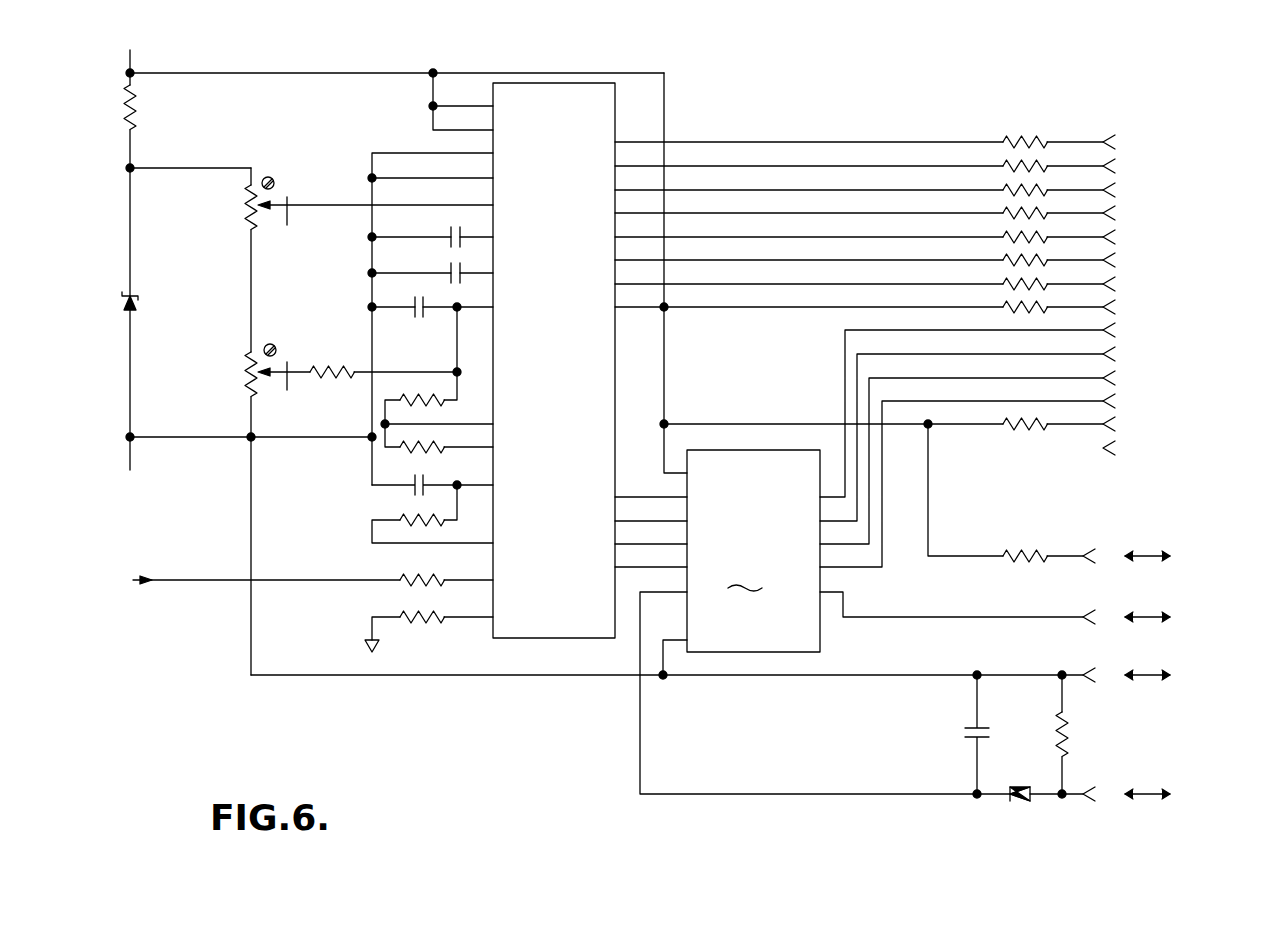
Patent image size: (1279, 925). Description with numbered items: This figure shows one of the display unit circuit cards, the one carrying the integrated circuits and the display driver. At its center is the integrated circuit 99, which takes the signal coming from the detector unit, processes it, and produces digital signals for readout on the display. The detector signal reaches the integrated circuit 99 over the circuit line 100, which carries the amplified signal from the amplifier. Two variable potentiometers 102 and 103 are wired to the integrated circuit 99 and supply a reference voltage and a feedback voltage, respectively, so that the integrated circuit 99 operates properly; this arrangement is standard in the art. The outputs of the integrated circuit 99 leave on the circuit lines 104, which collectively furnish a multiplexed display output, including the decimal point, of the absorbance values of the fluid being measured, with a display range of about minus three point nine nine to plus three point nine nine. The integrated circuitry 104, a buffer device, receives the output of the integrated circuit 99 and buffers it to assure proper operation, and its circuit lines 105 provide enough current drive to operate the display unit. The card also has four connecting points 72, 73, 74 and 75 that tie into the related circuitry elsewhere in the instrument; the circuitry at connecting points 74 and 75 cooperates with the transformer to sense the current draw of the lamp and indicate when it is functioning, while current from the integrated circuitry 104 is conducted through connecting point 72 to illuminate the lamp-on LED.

The integrated circuit 99 is at (538, 343).
The circuit line 100 is at (310, 583).
The variable potentiometer 102 is at (287, 195).
The variable potentiometer 103 is at (287, 360).
The integrated circuitry 104 is at (1162, 230).
The circuit lines 105 is at (1160, 394).
The connecting point 72 is at (1183, 553).
The connecting point 73 is at (1183, 615).
The connecting point 74 is at (1183, 674).
The connecting point 75 is at (1183, 792).